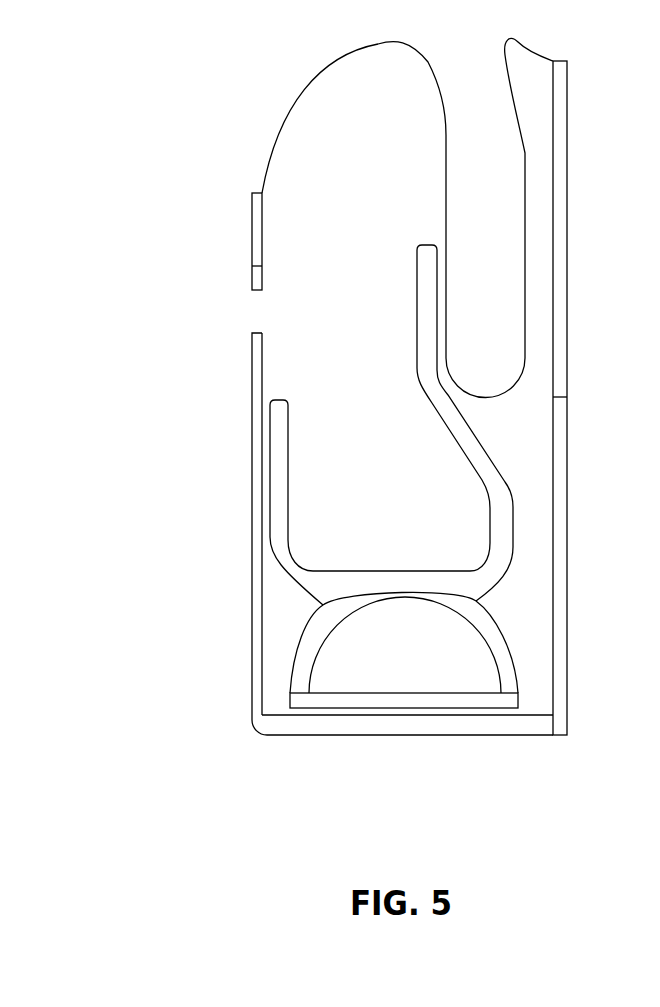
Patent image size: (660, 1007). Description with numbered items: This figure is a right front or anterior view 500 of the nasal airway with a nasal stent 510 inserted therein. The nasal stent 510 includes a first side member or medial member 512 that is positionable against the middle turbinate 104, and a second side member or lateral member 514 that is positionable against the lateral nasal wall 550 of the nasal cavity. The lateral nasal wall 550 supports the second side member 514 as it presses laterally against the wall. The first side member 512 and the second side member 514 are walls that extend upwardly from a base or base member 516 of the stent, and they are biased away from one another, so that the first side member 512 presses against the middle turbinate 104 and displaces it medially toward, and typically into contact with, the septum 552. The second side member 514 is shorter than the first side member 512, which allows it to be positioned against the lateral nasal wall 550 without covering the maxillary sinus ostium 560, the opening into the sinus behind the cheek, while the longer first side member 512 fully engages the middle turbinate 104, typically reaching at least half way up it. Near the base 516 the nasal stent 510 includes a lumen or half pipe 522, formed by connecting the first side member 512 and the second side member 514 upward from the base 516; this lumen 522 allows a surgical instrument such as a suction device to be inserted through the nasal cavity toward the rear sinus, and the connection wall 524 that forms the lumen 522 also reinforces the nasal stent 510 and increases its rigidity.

The right front or anterior view 500 is at (100, 70).
The middle turbinate 104 is at (444, 133).
The septum 552 is at (568, 242).
The lateral nasal wall 550 is at (251, 403).
The maxillary sinus ostium 560 is at (236, 318).
The nasal stent 510 is at (325, 718).
The second side member or lateral member 514 is at (268, 494).
The first side member or medial member 512 is at (417, 287).
The connection wall 524 is at (402, 570).
The lumen or half pipe 522 is at (422, 661).
The base or base member 516 is at (452, 714).